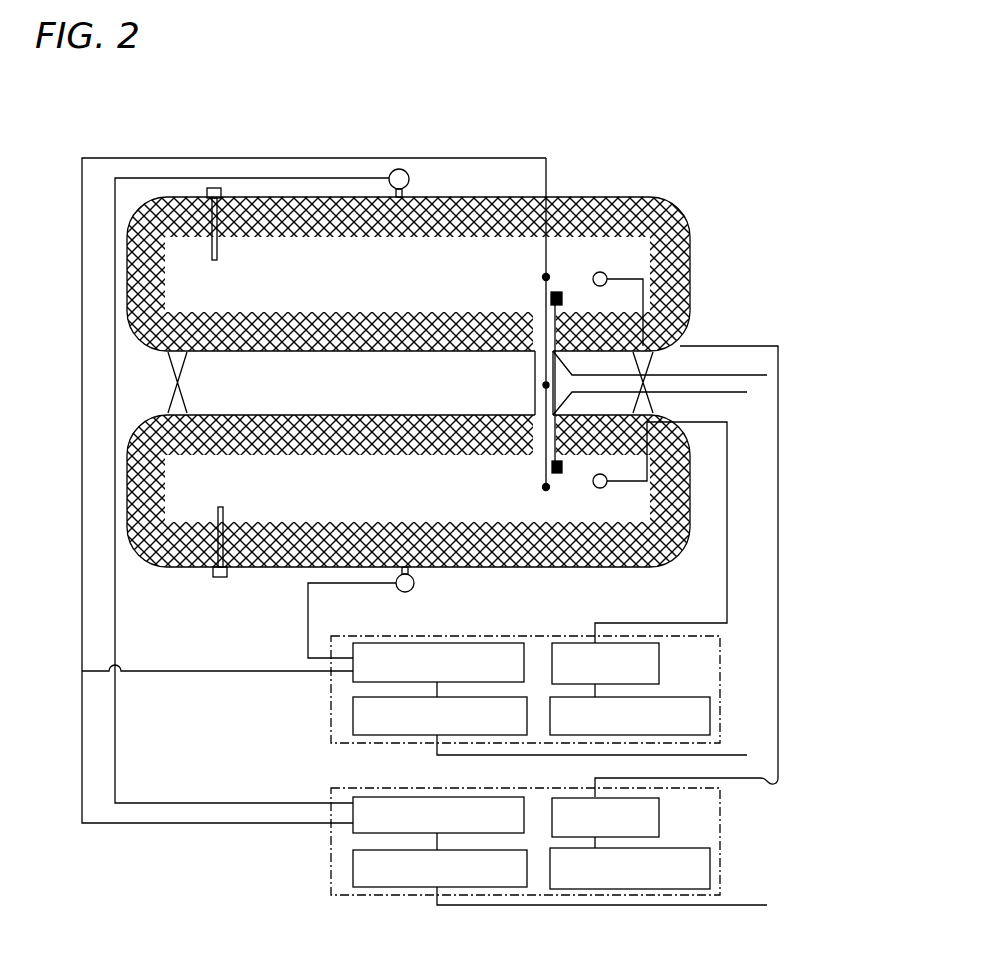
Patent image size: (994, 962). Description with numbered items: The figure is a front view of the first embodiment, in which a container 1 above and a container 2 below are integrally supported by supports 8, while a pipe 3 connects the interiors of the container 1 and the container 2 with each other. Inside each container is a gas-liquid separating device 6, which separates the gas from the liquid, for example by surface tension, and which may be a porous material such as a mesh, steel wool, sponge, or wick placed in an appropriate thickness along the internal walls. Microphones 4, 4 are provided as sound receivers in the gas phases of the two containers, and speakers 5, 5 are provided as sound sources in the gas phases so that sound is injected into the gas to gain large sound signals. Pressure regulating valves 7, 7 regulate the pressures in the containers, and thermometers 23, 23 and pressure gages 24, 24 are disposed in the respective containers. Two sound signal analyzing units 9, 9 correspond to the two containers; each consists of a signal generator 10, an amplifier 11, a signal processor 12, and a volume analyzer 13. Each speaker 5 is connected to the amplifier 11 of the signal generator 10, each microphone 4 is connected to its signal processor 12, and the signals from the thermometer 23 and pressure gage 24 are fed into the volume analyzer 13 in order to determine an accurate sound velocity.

The container 1 is at (572, 197).
The container 2 is at (250, 568).
The pipe 3 is at (546, 385).
The microphone 4 is at (560, 292).
The speaker 5 is at (607, 280).
The gas-liquid separating device 6 is at (127, 245).
The pressure regulating valve 7 is at (207, 188).
The support 8 is at (170, 358).
The sound signal analyzing unit 9 is at (330, 740).
The signal generator 10 is at (712, 737).
The amplifier 11 is at (659, 655).
The signal processor 12 is at (353, 715).
The volume analyzer 13 is at (353, 680).
The thermometer 23 is at (546, 277).
The pressure gage 24 is at (395, 170).